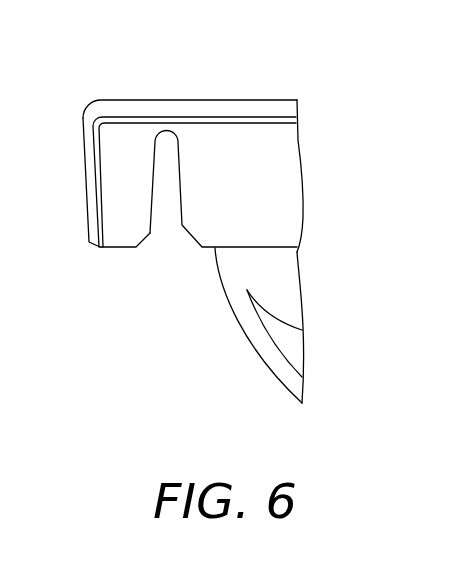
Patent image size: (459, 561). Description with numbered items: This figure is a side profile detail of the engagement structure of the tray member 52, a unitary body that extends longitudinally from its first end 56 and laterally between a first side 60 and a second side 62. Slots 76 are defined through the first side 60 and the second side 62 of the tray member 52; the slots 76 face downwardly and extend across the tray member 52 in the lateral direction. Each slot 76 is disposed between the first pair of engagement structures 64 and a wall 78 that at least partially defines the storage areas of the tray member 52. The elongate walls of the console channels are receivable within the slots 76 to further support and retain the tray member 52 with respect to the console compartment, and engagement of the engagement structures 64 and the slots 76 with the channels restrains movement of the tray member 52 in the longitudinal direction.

The tray member 52 is at (166, 62).
The first end 56 is at (83, 170).
The first side 60 is at (292, 184).
The second side 62 is at (298, 142).
The first pair of engagement structures 64 is at (95, 290).
The slots 76 is at (168, 258).
The wall 78 is at (245, 350).